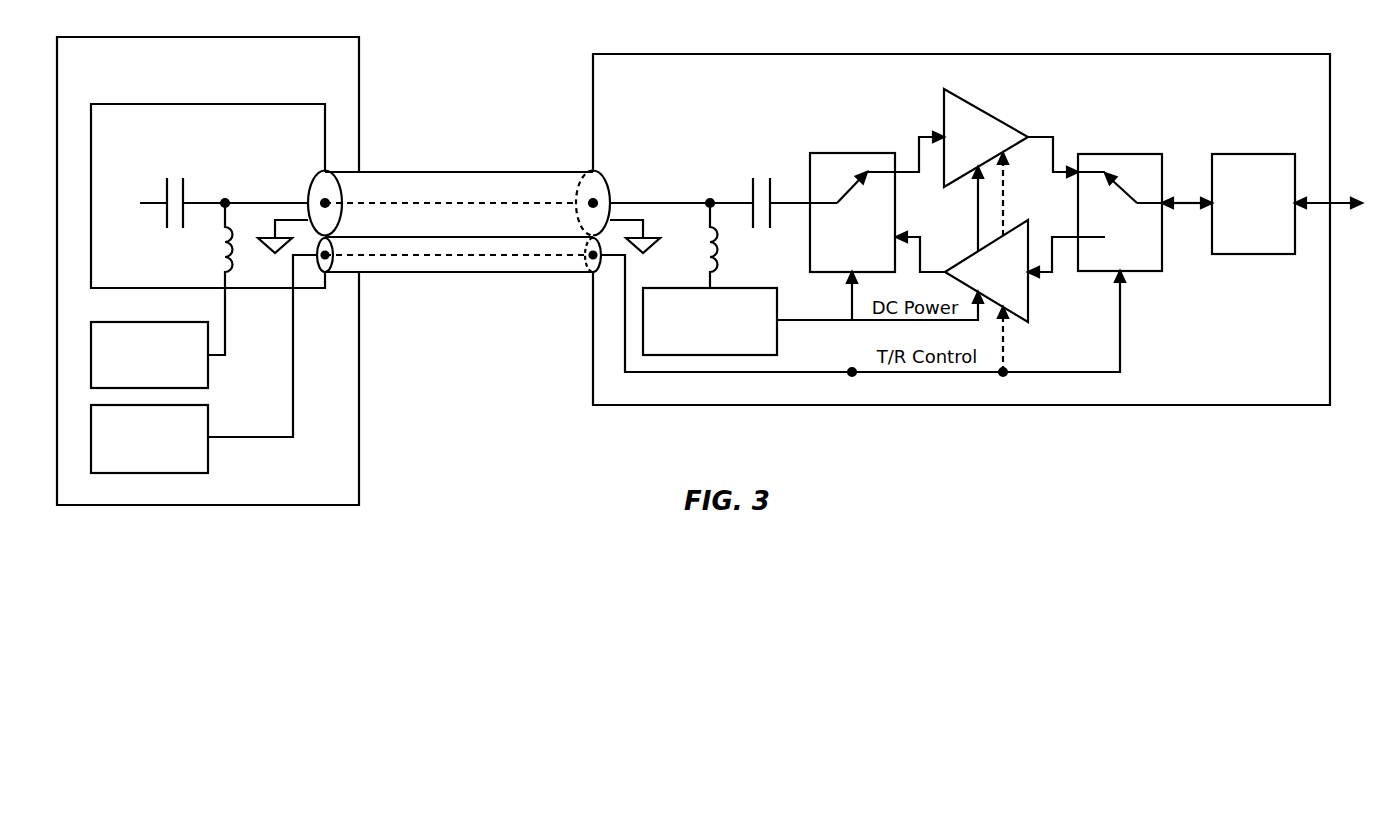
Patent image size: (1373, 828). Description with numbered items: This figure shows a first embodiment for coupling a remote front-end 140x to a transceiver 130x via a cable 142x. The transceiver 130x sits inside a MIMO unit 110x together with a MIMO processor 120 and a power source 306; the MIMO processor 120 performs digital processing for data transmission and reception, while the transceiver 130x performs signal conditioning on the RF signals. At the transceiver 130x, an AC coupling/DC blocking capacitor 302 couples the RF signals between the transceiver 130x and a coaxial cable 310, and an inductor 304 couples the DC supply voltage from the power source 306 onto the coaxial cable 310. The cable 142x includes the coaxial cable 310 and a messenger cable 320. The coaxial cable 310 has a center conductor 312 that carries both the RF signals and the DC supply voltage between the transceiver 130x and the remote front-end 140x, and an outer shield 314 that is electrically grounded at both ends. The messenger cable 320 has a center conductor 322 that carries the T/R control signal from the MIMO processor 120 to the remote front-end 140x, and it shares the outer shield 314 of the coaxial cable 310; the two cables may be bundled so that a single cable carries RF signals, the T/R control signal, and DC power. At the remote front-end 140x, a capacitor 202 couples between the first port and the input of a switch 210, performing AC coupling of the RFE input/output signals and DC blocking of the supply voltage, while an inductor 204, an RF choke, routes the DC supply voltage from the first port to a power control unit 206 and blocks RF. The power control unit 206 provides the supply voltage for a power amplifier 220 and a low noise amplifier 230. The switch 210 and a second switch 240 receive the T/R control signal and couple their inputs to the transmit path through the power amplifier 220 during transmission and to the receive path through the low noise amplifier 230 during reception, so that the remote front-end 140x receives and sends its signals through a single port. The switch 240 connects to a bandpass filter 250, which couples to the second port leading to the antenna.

The MIMO unit 110x is at (207, 37).
The transceiver 130x is at (300, 104).
The cable 142x is at (459, 186).
The remote front-end 140x is at (951, 54).
The coaxial cable 310 is at (459, 186).
The outer shield 314 is at (510, 172).
The center conductor 312 is at (510, 203).
The messenger cable 320 is at (459, 273).
The center conductor 322 is at (510, 258).
The capacitor 302 is at (166, 227).
The inductor 304 is at (214, 258).
The power source 306 is at (210, 374).
The MIMO processor 120 is at (210, 459).
The capacitor 202 is at (751, 187).
The inductor 204 is at (704, 242).
The power control unit 206 is at (748, 288).
The switch 210 is at (848, 153).
The power amplifier 220 is at (981, 102).
The low noise amplifier 230 is at (965, 252).
The switch 240 is at (1117, 153).
The bandpass filter 250 is at (1250, 153).